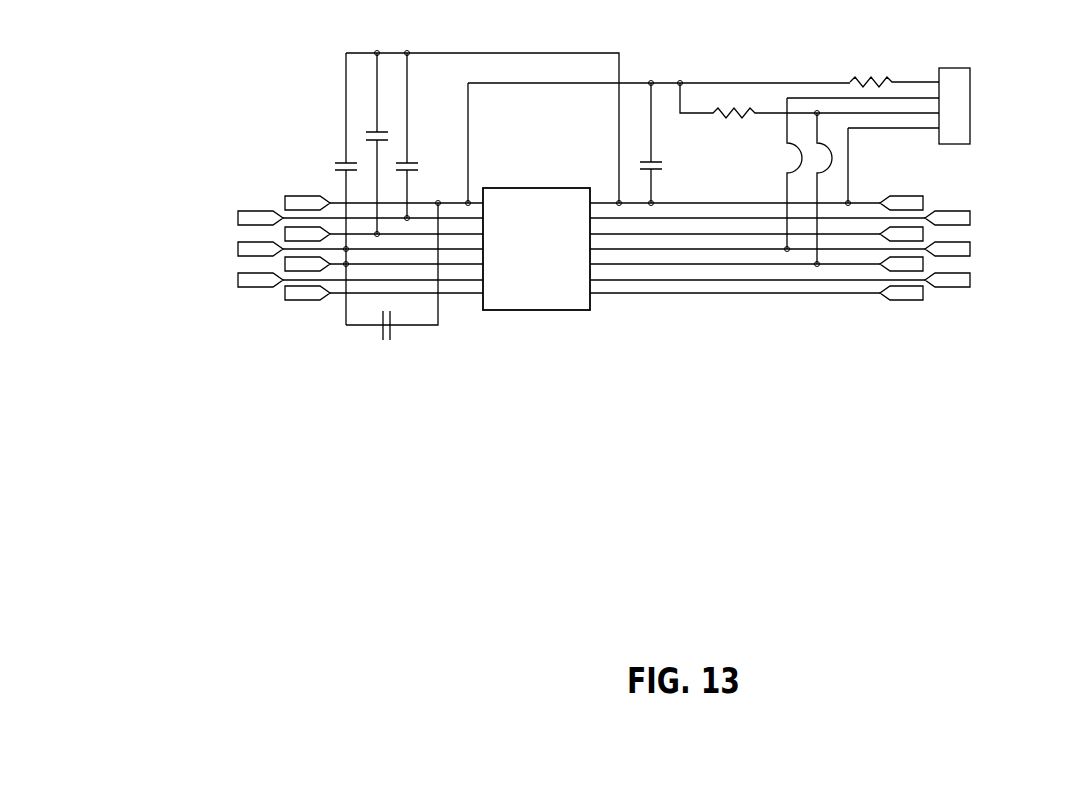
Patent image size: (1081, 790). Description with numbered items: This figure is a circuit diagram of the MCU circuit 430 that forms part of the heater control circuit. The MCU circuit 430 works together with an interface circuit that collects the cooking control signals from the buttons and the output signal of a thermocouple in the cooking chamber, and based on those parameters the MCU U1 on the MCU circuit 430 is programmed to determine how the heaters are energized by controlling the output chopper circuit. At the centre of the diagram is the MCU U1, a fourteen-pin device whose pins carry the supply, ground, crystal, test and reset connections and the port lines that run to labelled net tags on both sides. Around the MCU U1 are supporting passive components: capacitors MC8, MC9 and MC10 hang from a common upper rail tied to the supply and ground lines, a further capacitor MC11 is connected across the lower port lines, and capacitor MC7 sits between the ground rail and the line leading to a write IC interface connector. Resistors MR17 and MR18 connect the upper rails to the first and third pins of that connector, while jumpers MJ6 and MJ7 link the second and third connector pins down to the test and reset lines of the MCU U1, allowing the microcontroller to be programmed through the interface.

The MCU circuit 430 is at (628, 261).
The MCU U1 is at (538, 298).
The capacitor MC7 is at (658, 143).
The capacitor MC8 is at (352, 151).
The capacitor MC9 is at (413, 135).
The capacitor MC10 is at (386, 143).
The capacitor MC11 is at (404, 325).
The resistor MR17 is at (894, 77).
The resistor MR18 is at (809, 100).
The jumper MJ6 is at (787, 173).
The jumper MJ7 is at (817, 188).